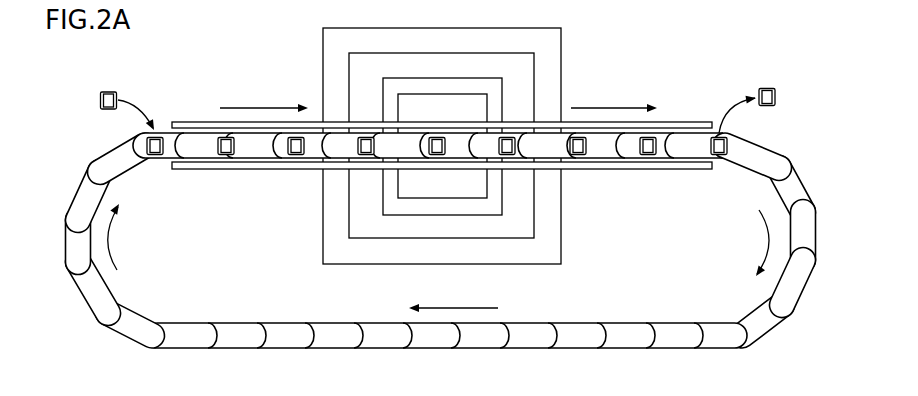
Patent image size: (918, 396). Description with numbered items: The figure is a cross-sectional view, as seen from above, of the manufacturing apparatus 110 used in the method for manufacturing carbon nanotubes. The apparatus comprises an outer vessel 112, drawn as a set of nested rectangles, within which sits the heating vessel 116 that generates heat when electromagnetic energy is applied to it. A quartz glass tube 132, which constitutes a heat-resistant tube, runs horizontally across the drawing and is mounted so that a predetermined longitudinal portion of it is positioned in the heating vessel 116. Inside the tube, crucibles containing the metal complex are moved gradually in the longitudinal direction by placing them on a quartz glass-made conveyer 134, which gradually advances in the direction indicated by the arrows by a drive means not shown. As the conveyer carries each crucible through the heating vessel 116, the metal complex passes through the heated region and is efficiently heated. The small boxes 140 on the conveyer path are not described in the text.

The manufacturing apparatus 110 is at (667, 57).
The outer vessel 112 is at (561, 53).
The heating vessel 116 is at (383, 200).
The quartz glass tube 132 is at (690, 121).
The quartz glass-made conveyer 134 is at (663, 323).
The workpieces / parts 140 is at (229, 155).